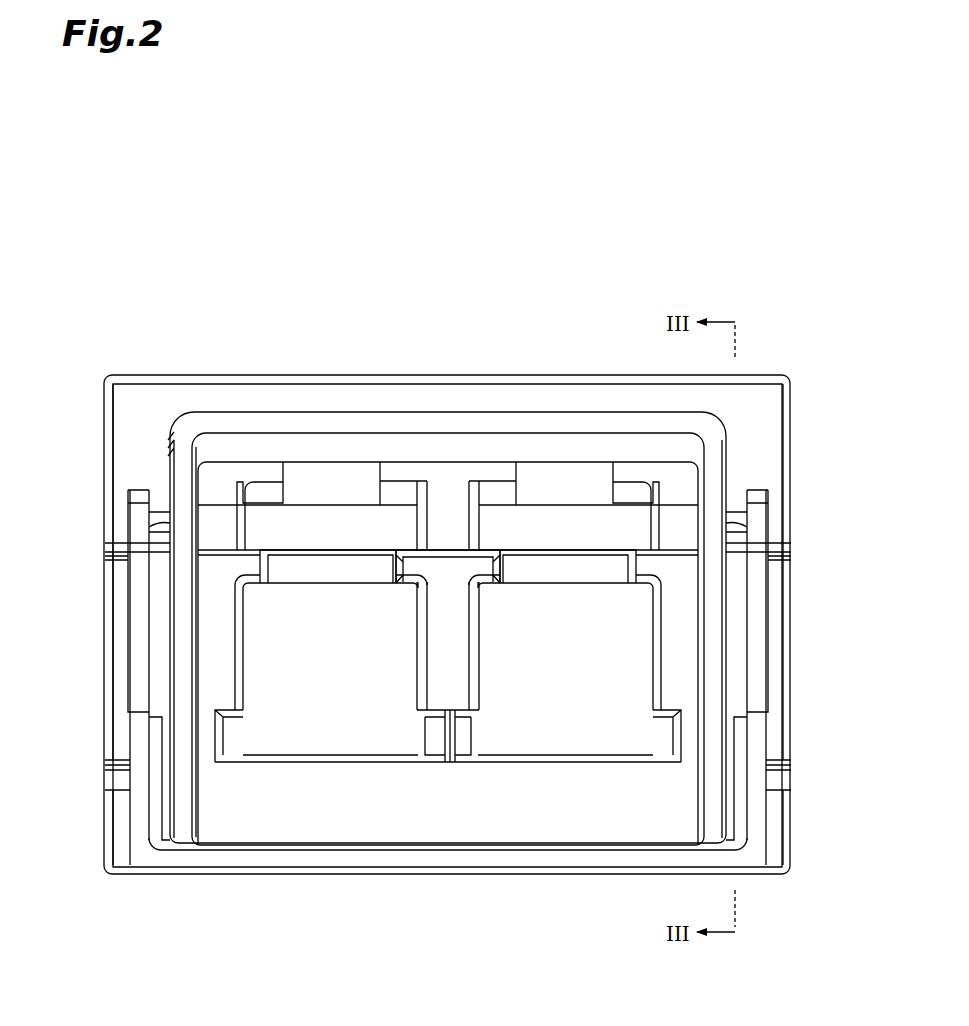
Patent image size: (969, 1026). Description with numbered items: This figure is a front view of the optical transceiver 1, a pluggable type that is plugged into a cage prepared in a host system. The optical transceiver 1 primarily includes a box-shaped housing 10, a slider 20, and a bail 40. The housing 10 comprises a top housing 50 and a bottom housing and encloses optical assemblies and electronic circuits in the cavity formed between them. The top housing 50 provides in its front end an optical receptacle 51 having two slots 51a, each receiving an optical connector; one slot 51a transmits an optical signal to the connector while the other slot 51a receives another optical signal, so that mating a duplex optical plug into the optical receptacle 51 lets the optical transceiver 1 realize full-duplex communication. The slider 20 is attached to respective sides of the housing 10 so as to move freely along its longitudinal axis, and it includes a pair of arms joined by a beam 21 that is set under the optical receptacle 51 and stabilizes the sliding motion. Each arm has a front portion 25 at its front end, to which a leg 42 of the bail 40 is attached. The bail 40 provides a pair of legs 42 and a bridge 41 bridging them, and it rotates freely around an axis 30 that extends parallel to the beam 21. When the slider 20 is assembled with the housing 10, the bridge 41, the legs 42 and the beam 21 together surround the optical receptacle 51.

The optical transceiver 1 is at (676, 195).
The housing 10 is at (212, 295).
The slider 20 is at (136, 476).
The beam 21 is at (319, 860).
The front portion 25 is at (137, 515).
The axis 30 is at (104, 765).
The bail 40 is at (560, 400).
The bridge 41 is at (447, 425).
The leg 42 is at (185, 597).
The top housing 50 is at (314, 356).
The optical receptacle 51 is at (535, 825).
The slot 51a is at (356, 683).